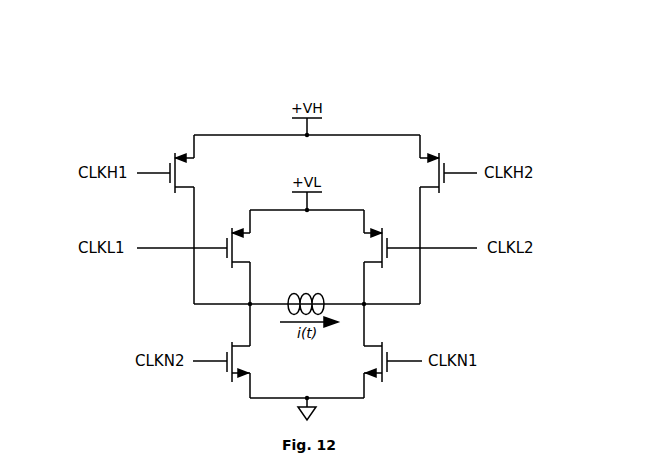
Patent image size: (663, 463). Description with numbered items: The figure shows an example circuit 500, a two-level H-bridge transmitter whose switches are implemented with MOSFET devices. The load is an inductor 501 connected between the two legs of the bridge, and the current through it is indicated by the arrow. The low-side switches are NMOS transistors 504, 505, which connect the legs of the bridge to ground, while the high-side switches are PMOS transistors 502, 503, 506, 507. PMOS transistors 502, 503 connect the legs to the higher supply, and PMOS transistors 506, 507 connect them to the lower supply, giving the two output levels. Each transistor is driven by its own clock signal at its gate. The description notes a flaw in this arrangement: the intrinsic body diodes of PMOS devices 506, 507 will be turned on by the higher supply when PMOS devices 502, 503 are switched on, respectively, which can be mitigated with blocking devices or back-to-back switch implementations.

The circuit 500 is at (402, 117).
The inductor 501 is at (306, 292).
The PMOS high-side switch 502 is at (213, 165).
The PMOS high-side switch 503 is at (420, 172).
The NMOS low-side switch 504 is at (269, 353).
The NMOS low-side switch 505 is at (364, 360).
The PMOS high-side switch 506 is at (269, 240).
The PMOS high-side switch 507 is at (364, 247).